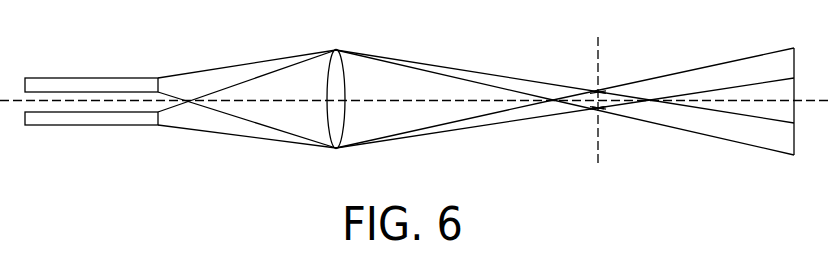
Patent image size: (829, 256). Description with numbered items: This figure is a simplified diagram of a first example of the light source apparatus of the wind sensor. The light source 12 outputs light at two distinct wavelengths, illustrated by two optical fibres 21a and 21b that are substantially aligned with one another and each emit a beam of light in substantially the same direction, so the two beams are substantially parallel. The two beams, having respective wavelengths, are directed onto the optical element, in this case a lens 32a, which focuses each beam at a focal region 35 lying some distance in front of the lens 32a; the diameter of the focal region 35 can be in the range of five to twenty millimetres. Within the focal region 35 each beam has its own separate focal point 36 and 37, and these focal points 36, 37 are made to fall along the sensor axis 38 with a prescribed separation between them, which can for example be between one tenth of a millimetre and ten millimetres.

The light source 12 is at (91, 125).
The optical fibre 21a is at (137, 83).
The optical fibre 21b is at (82, 150).
The lens 32a is at (338, 65).
The focal region 35 is at (600, 92).
The focal point 36 is at (584, 111).
The focal point 37 is at (598, 108).
The sensor axis 38 is at (600, 146).